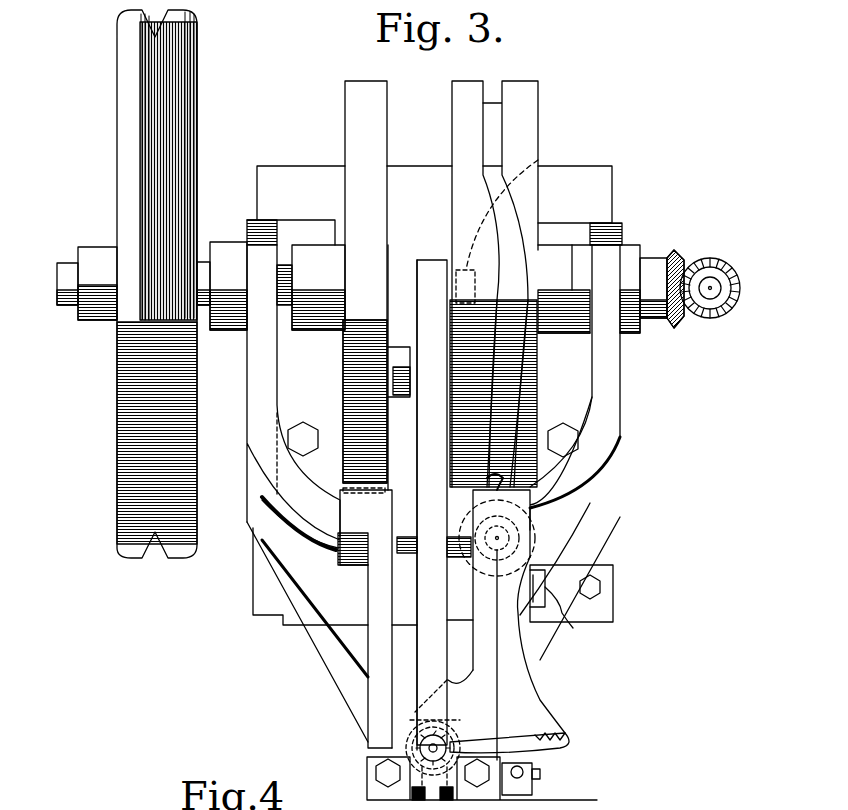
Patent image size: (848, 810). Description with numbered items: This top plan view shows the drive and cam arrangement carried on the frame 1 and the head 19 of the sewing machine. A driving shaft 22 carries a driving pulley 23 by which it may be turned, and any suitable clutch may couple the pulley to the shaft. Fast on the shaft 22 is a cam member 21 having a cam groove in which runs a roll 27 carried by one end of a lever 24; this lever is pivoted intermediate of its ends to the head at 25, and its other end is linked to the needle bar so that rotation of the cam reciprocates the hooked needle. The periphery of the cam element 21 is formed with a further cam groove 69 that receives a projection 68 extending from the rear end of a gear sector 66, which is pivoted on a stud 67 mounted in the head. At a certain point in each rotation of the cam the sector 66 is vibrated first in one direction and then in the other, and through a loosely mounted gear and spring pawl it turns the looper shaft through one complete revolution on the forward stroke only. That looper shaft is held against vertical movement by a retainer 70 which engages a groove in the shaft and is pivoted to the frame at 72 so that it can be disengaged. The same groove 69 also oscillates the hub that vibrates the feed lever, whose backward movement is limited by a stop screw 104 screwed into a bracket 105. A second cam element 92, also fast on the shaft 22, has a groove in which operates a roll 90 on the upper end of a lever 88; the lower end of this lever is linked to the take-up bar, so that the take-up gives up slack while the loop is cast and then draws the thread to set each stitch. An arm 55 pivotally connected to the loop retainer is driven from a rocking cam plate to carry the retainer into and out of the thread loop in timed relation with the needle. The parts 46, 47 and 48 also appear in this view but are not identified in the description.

The frame 1 is at (577, 170).
The head 19 is at (368, 752).
The cam member 21 is at (452, 110).
The driving shaft 22 is at (287, 270).
The driving pulley 23 is at (163, 78).
The lever 24 is at (427, 588).
The lever pivot 25 is at (393, 522).
The roll 27 is at (515, 219).
The hub 46 is at (712, 283).
The gear 47 is at (738, 272).
The bevel gear 48 is at (678, 253).
The arm 55 is at (517, 773).
The gear sector 66 is at (533, 697).
The stud 67 is at (512, 540).
The projection 68 is at (540, 503).
The cam groove 69 is at (537, 362).
The retainer 70 is at (410, 757).
The retainer pivot 72 is at (453, 740).
The lever 88 is at (398, 358).
The roll 90 is at (345, 374).
The cam element 92 is at (352, 97).
The stop screw 104 is at (583, 616).
The bracket 105 is at (530, 566).